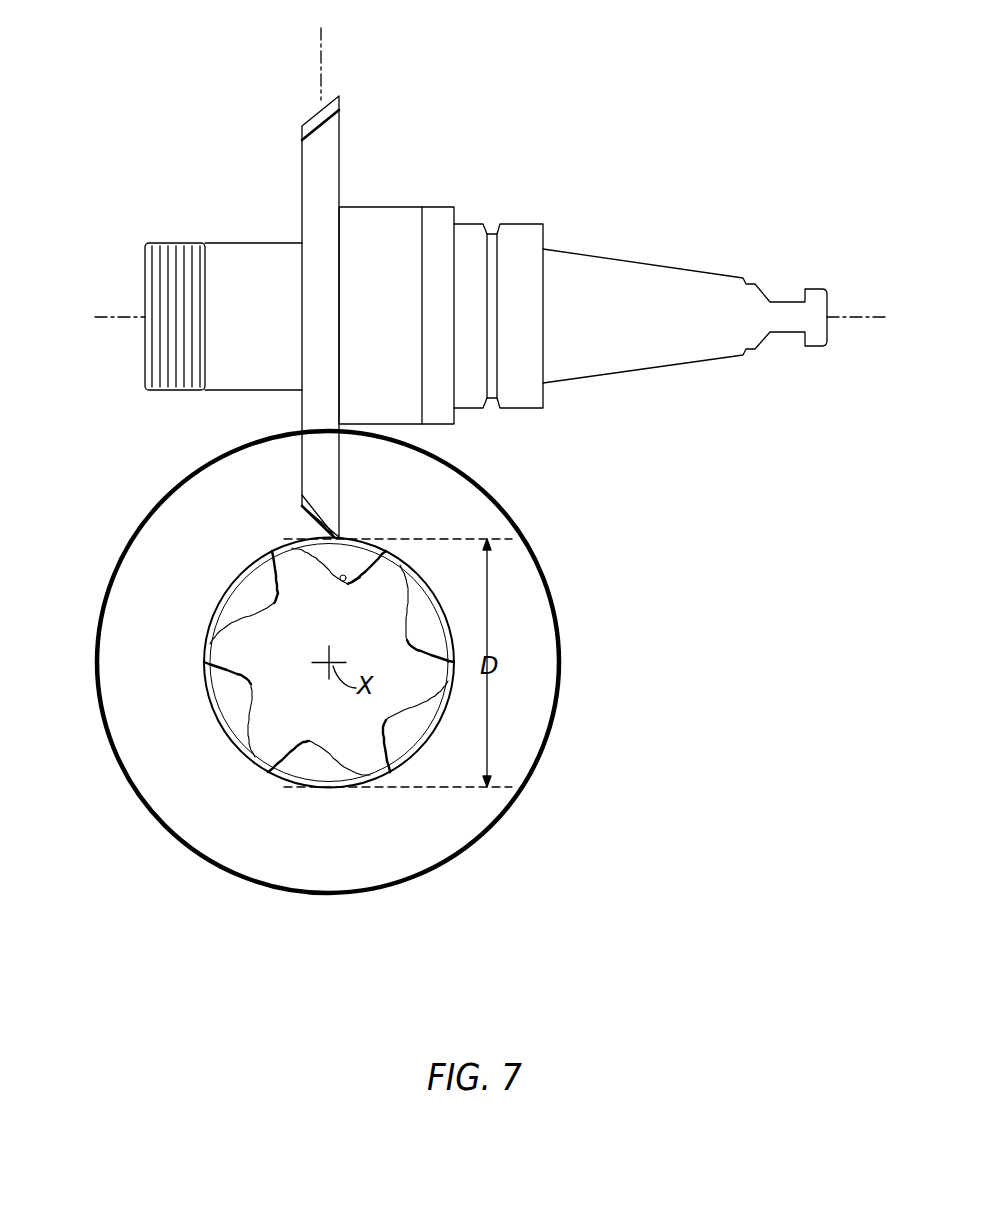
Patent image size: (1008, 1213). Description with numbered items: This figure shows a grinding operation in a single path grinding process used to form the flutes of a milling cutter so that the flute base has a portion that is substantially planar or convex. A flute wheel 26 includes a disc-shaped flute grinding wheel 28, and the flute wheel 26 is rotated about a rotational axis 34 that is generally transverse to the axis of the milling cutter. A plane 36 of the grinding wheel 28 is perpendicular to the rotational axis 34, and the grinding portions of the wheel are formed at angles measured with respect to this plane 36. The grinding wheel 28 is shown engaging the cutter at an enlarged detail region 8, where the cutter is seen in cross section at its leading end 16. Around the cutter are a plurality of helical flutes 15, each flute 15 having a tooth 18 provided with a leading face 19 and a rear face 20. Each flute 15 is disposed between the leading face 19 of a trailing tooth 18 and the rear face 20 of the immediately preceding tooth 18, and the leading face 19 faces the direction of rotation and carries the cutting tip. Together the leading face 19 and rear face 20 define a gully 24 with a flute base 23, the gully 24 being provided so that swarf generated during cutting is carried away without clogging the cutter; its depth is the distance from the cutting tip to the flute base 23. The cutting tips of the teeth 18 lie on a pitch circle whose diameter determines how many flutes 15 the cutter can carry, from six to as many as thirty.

The enlarged detail circle 8 is at (553, 728).
The helical flute 15 is at (360, 566).
The leading end 16 is at (302, 714).
The tooth 18 is at (275, 552).
The leading face 19 is at (381, 564).
The rear face 20 is at (314, 554).
The flute base 23 is at (340, 581).
The gully 24 is at (353, 578).
The flute wheel 26 is at (654, 176).
The flute grinding wheel 28 is at (331, 165).
The rotational axis 34 is at (103, 316).
The plane of the grinding wheel 36 is at (322, 62).